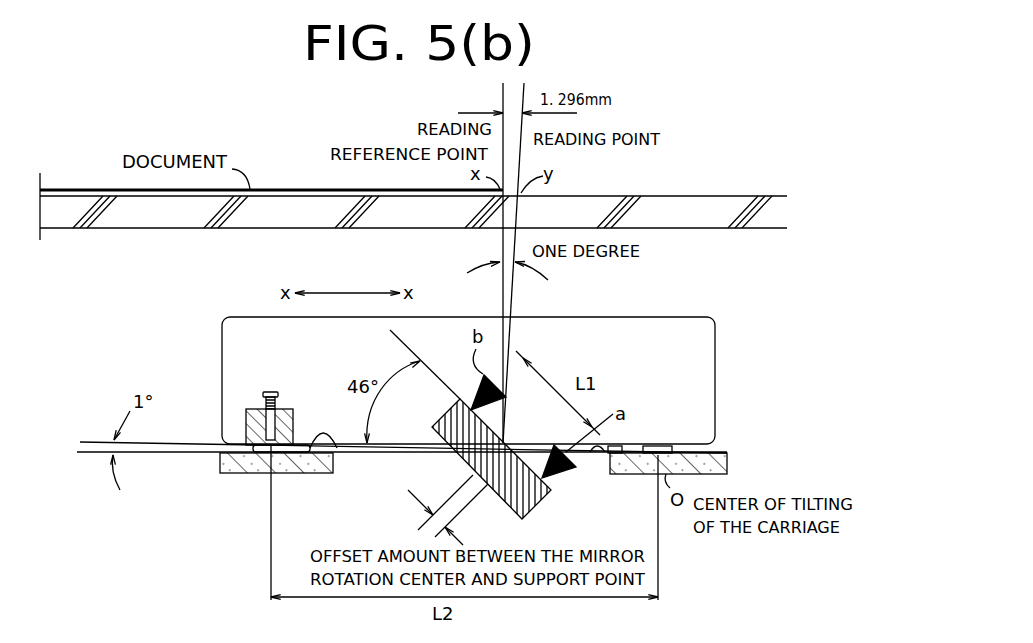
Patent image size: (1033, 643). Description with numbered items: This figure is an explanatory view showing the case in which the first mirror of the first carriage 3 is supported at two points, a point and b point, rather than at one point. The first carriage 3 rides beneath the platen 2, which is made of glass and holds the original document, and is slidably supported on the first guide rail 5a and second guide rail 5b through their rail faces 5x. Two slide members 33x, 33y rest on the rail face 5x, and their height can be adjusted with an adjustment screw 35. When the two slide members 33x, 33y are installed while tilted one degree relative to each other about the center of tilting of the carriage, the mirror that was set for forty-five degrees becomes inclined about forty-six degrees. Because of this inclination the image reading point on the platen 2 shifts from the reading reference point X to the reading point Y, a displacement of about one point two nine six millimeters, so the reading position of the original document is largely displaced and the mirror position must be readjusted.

The platen 2 is at (667, 207).
The first carriage 3 is at (606, 324).
The adjustment screw 35 is at (272, 392).
The slide member 33x is at (727, 449).
The slide member 33y is at (213, 449).
The first guide rail 5a is at (260, 475).
The second guide rail 5b is at (612, 478).
The rail face 5x is at (334, 452).